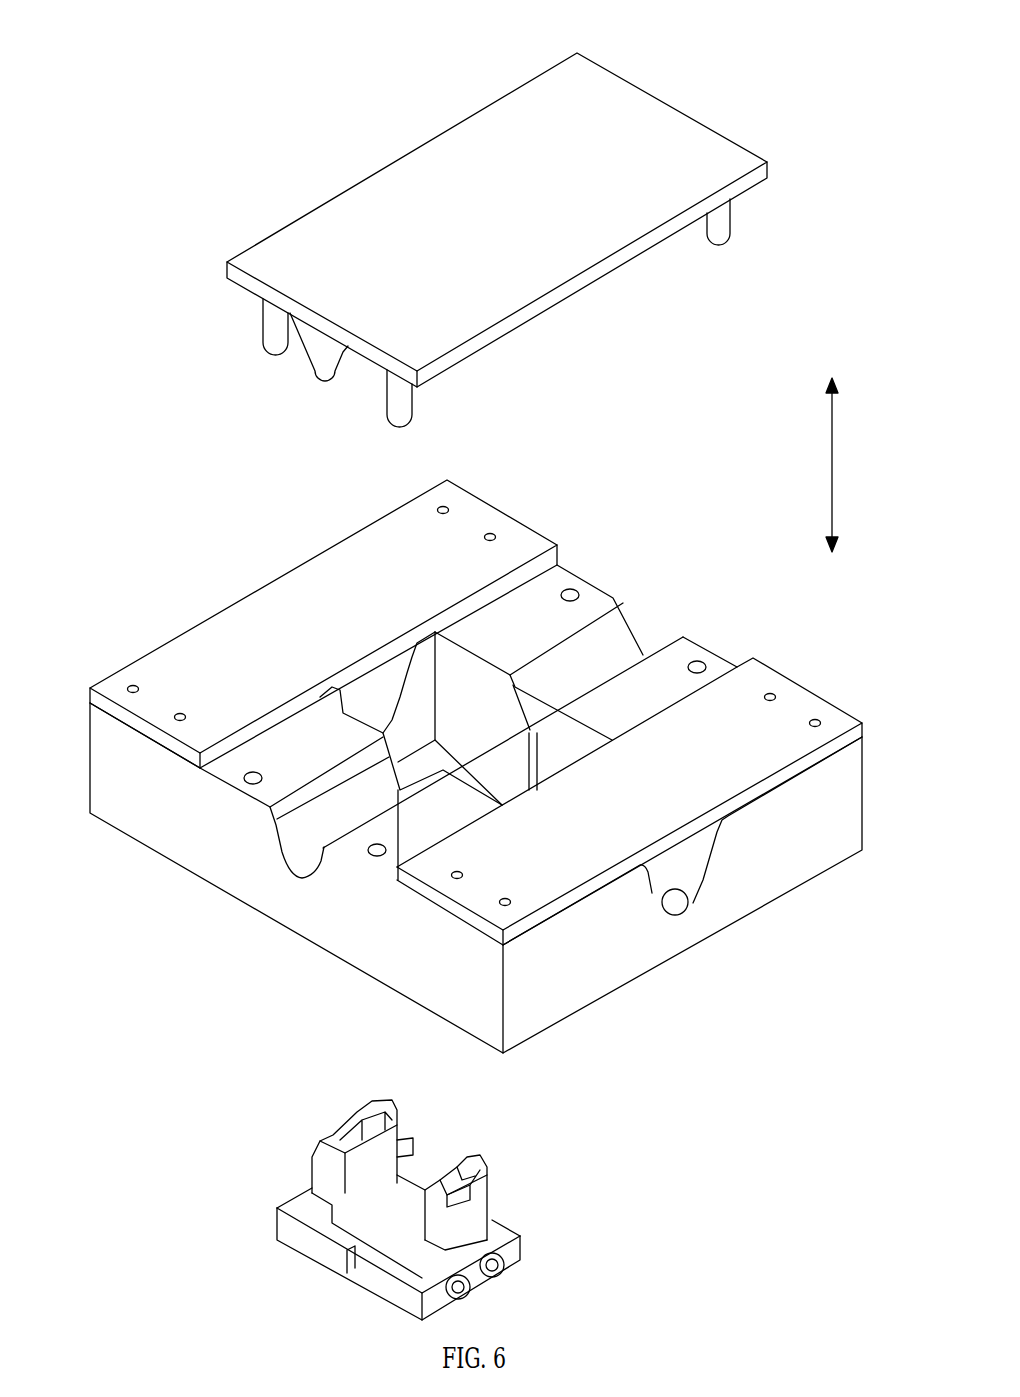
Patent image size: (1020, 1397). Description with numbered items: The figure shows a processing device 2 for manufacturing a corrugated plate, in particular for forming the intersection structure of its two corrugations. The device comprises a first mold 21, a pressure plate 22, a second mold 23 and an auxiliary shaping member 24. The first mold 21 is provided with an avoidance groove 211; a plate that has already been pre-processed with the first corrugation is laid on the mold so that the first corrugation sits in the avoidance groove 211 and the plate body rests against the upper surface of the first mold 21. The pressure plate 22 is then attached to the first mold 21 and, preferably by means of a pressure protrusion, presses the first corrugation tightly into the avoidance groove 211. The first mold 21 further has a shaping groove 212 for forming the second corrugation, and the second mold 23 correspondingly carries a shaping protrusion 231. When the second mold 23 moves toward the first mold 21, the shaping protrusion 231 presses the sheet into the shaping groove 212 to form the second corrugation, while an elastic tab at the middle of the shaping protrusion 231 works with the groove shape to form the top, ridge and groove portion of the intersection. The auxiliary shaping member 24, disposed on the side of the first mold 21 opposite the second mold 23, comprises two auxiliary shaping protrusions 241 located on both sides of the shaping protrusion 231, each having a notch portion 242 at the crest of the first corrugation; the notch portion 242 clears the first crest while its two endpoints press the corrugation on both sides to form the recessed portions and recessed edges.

The processing device 2 is at (158, 97).
The first mold 21 is at (476, 841).
The avoidance groove 211 is at (693, 907).
The shaping groove 212 is at (618, 648).
The pressure plate 22 is at (207, 643).
The second mold 23 is at (491, 261).
The shaping protrusion 231 is at (300, 354).
The auxiliary shaping member 24 is at (295, 1181).
The auxiliary shaping protrusion 241 is at (312, 1150).
The notch portion 242 is at (340, 1127).